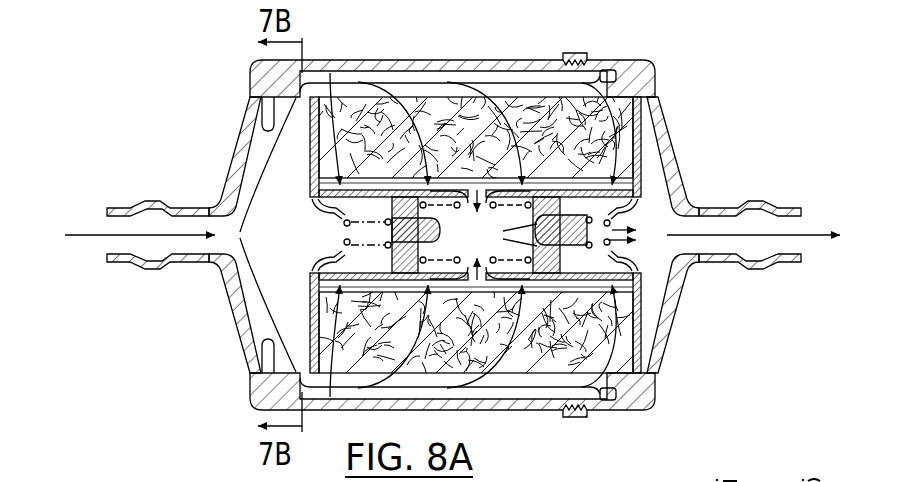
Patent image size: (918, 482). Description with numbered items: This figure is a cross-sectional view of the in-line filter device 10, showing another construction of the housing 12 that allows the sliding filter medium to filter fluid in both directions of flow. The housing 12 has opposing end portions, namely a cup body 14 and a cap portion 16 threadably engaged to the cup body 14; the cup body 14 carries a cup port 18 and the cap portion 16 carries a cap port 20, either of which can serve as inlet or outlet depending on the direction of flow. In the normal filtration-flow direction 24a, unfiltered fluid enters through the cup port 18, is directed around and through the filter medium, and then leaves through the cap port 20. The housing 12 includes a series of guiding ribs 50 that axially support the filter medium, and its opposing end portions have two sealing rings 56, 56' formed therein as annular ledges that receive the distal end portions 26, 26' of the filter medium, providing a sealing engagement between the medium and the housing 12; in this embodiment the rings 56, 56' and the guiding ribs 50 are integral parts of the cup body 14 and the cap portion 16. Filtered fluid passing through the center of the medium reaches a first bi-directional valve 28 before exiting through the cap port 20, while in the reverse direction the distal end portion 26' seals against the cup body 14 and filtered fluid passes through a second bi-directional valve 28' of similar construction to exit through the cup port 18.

The in-line filter device 10 is at (133, 150).
The housing 12 is at (251, 66).
The cup body 14 is at (230, 155).
The cap portion 16 is at (658, 97).
The cup port 18 is at (110, 221).
The cap port 20 is at (798, 219).
The filtration-flow direction 24a is at (78, 233).
The distal end portion 26 is at (525, 335).
The distal end portion 26' is at (203, 305).
The first bi-directional valve 28 is at (601, 240).
The second bi-directional valve 28' is at (360, 235).
The guiding ribs 50 is at (340, 72).
The sealing ring 56 is at (432, 234).
The sealing ring 56' is at (231, 356).